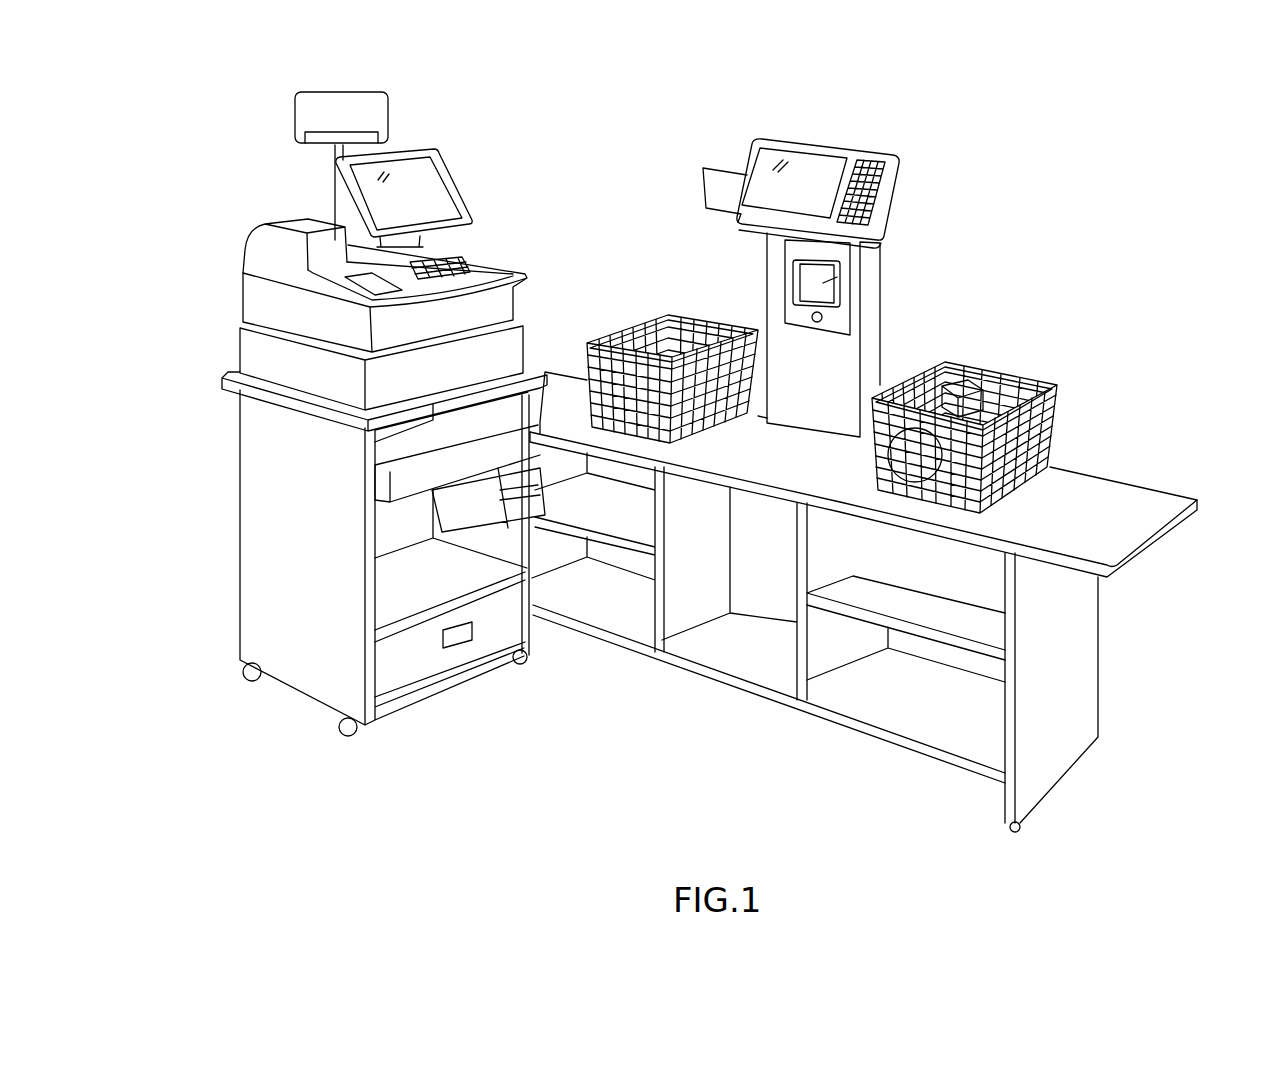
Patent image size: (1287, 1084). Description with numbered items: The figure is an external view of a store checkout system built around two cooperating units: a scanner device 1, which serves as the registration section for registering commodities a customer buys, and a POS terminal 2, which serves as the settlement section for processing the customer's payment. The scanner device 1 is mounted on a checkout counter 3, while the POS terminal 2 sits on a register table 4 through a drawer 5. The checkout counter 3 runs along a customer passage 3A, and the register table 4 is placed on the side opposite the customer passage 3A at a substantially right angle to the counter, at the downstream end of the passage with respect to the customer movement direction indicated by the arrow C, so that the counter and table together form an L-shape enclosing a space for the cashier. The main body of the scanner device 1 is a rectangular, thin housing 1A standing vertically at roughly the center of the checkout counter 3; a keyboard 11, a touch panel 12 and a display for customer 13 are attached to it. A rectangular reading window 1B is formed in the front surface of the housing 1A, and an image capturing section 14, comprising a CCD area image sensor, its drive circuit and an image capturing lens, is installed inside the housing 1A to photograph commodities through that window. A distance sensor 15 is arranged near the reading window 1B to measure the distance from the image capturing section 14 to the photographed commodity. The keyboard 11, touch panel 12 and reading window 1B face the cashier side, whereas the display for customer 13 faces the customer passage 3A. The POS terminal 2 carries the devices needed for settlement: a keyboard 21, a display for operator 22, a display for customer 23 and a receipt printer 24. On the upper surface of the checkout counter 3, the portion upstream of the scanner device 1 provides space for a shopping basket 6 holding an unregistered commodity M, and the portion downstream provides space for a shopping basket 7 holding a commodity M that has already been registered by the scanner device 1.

The scanner device 1 is at (811, 269).
The housing 1A is at (875, 323).
The reading window 1B is at (793, 280).
The POS terminal 2 is at (374, 222).
The checkout counter 3 is at (885, 602).
The customer passage 3A is at (885, 540).
The register table 4 is at (247, 500).
The drawer 5 is at (240, 347).
The shopping basket 6 is at (986, 418).
The shopping basket 7 is at (632, 323).
The keyboard 11 is at (870, 162).
The touch panel 12 is at (813, 157).
The display for customer 13 is at (703, 192).
The image capturing section 14 is at (843, 287).
The distance sensor 15 is at (817, 323).
The keyboard 21 is at (482, 257).
The display for operator 22 is at (457, 180).
The display for customer 23 is at (388, 110).
The receipt printer 24 is at (305, 223).
The commodity M is at (960, 372).
The arrow indicating customer movement direction C is at (1240, 690).